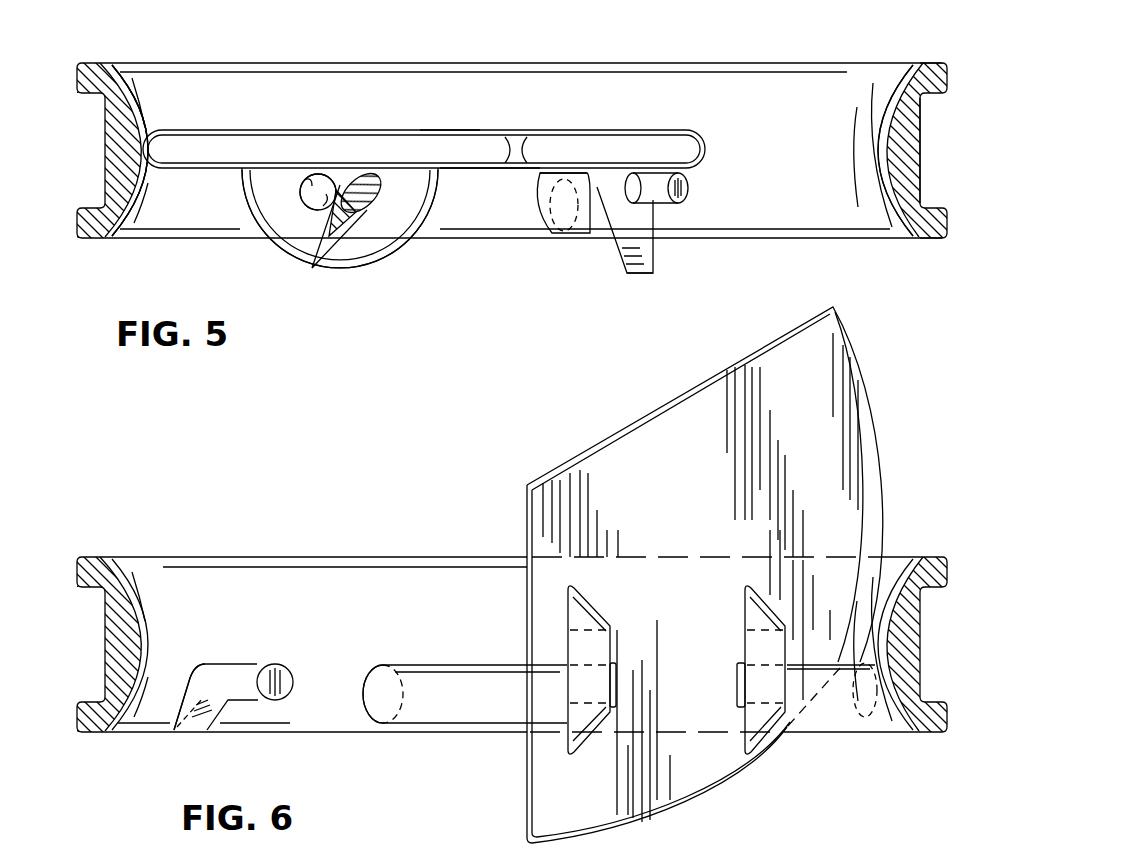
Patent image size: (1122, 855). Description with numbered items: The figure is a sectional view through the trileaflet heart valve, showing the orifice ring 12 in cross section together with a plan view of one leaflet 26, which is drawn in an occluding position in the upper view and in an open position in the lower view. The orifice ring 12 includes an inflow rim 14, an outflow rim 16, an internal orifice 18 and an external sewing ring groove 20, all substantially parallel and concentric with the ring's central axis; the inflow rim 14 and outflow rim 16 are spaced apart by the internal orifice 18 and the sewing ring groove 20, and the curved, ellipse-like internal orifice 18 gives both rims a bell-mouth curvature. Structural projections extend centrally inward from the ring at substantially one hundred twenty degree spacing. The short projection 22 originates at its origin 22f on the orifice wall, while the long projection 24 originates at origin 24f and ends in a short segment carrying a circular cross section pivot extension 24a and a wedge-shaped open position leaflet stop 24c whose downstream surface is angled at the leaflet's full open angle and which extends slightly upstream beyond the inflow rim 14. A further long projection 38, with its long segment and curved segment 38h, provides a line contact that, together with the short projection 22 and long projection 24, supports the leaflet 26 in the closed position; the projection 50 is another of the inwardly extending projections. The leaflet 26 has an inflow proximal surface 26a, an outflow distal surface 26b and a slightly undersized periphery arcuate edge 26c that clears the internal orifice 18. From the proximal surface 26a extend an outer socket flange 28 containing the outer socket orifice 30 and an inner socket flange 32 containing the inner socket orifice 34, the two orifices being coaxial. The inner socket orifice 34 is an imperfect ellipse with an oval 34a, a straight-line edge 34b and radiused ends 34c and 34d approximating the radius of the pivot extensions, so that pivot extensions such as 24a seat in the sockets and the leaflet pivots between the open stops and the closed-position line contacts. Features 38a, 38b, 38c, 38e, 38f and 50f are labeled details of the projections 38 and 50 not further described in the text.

In FIG. 5, the orifice ring 12 is at (908, 133).
In FIG. 5, the inflow rim 14 is at (927, 240).
In FIG. 5, the outflow rim 16 is at (930, 65).
In FIG. 5, the internal orifice 18 is at (132, 212).
In FIG. 5, the external sewing ring groove 20 is at (920, 190).
In FIG. 6, the short projection 22 is at (863, 653).
In FIG. 6, the origin 22f is at (870, 682).
In FIG. 6, the long projection 24 is at (450, 655).
In FIG. 5, the pivot extension 24a is at (382, 188).
In FIG. 5, the open position leaflet stop 24c is at (313, 250).
In FIG. 6, the origin 24f is at (367, 663).
In FIG. 5, the leaflet 26 is at (417, 128).
In FIG. 6, the leaflet 26 is at (820, 396).
In FIG. 5, the inflow proximal surface 26a is at (488, 174).
In FIG. 5, the outflow distal surface 26b is at (447, 128).
In FIG. 5, the periphery arcuate edge 26c is at (139, 107).
In FIG. 6, the outer socket flange 28 is at (762, 603).
In FIG. 6, the outer socket orifice 30 is at (757, 647).
In FIG. 5, the inner socket flange 32 is at (243, 208).
In FIG. 6, the inner socket flange 32 is at (593, 600).
In FIG. 5, the inner socket orifice 34 is at (305, 197).
In FIG. 6, the inner socket orifice 34 is at (593, 645).
In FIG. 5, the oval 34a is at (323, 210).
In FIG. 5, the straight-line edge 34b is at (327, 175).
In FIG. 5, the end 34c is at (367, 208).
In FIG. 5, the end 34d is at (300, 190).
In FIG. 5, the long projection 38 is at (655, 195).
In FIG. 5, the clip pin 38a is at (668, 207).
In FIG. 5, the clip pin end 38b is at (690, 185).
In FIG. 5, the clip leg 38c is at (655, 240).
In FIG. 5, the clip leg end 38e is at (655, 247).
In FIG. 5, the clip ring top 38f is at (560, 187).
In FIG. 5, the curved segment 38h is at (535, 197).
In FIG. 6, the structural projection 50 is at (251, 655).
In FIG. 6, the clip foot 50f is at (198, 663).